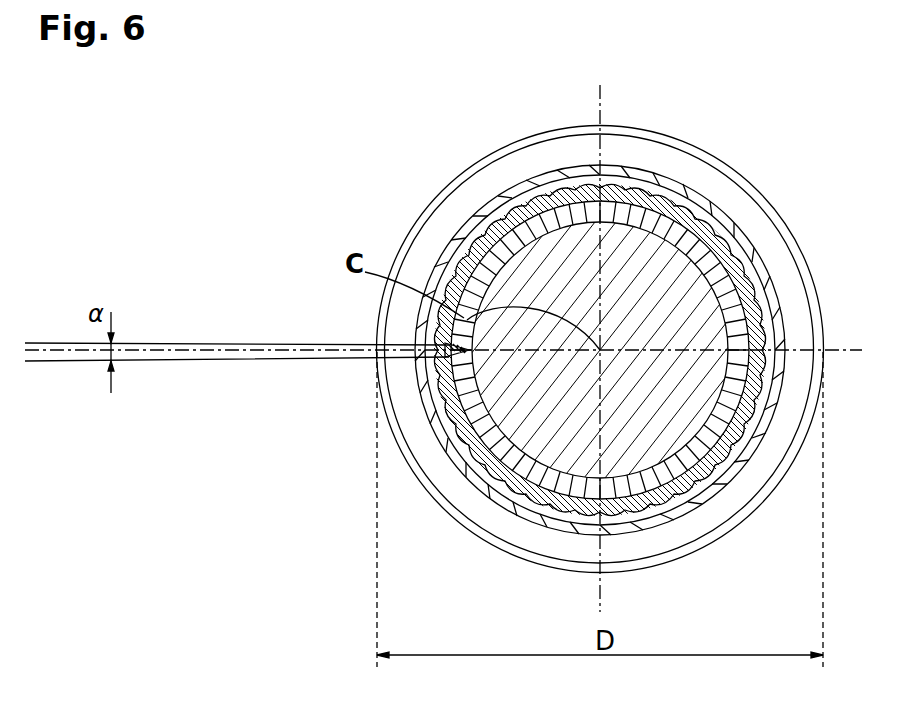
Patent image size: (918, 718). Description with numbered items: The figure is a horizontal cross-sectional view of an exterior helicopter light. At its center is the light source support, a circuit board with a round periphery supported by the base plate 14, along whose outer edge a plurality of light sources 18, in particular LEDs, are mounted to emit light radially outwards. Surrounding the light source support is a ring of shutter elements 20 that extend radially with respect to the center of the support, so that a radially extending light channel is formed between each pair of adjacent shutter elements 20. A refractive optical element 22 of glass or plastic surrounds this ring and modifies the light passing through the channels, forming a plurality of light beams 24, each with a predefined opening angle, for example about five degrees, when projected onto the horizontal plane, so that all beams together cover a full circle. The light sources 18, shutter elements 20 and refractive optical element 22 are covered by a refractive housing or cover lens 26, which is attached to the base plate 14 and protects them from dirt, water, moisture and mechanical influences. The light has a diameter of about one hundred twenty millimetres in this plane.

The base plate 14 is at (675, 255).
The light sources 18 is at (629, 208).
The shutter elements 20 is at (733, 268).
The refractive optical element 22 is at (483, 207).
The light beams 24 is at (187, 361).
The refractive housing or cover lens 26 is at (453, 238).